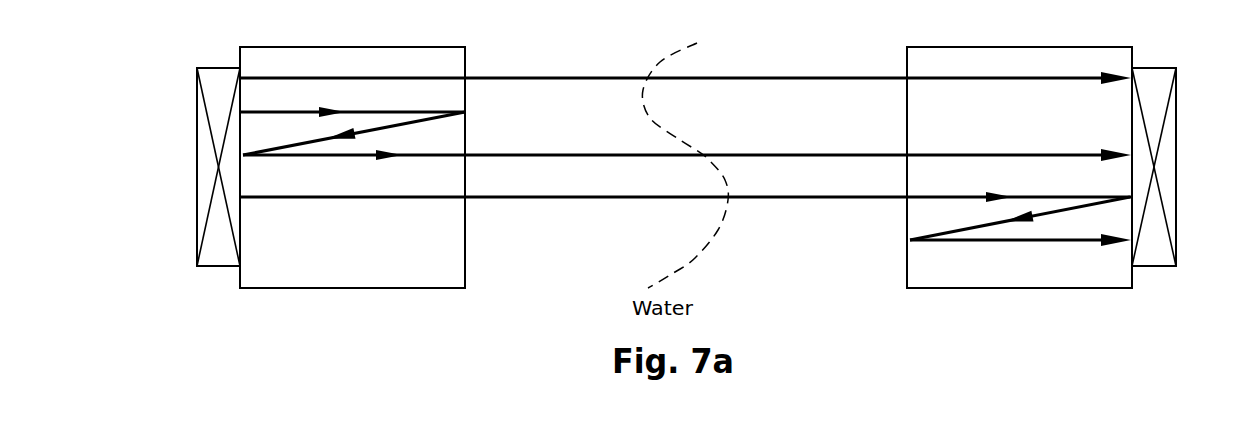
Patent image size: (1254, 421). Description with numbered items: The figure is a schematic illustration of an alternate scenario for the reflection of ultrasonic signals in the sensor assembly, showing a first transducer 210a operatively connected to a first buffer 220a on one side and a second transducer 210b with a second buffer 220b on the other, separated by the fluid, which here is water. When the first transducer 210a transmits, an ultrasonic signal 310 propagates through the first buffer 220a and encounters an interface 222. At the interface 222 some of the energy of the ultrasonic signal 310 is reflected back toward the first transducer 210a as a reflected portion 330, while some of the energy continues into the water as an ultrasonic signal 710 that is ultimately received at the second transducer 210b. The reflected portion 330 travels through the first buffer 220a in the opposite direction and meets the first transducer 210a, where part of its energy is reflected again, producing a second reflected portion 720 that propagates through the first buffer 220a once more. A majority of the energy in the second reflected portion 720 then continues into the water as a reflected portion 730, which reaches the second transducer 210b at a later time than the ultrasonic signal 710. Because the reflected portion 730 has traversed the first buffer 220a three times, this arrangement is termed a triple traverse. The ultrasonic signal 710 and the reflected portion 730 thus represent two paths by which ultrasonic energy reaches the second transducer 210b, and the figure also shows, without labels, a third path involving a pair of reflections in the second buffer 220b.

The first transducer 210a is at (212, 280).
The second transducer 210b is at (1158, 280).
The first buffer 220a is at (388, 288).
The second buffer 220b is at (1052, 288).
The interface 222 is at (484, 270).
The ultrasonic signal 310 is at (320, 77).
The reflected portion 330 is at (392, 126).
The ultrasonic signal 710 is at (777, 67).
The second reflected portion 720 is at (443, 157).
The reflected portion 730 is at (530, 154).